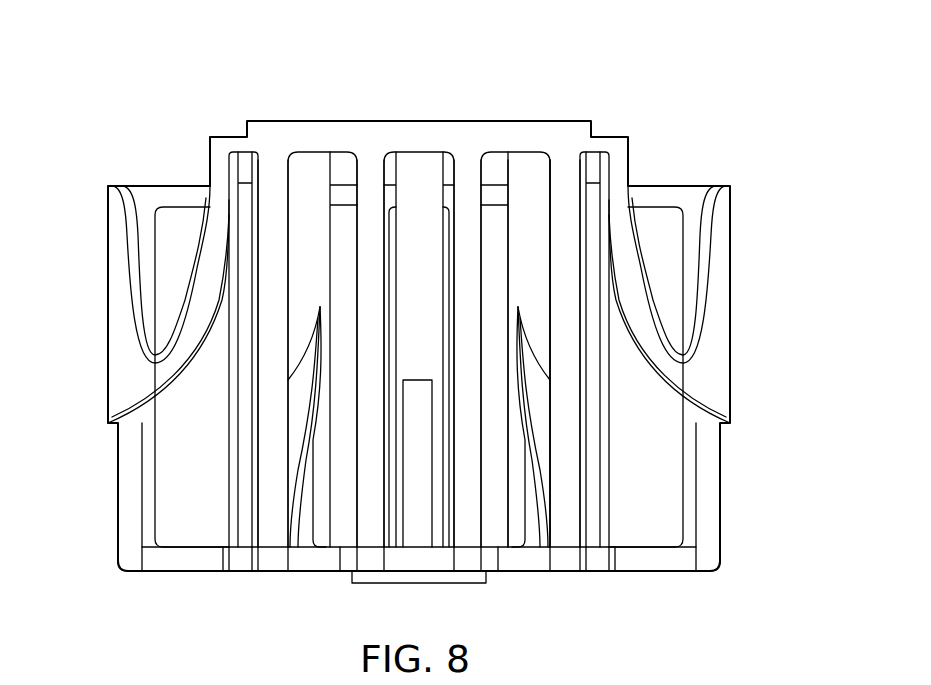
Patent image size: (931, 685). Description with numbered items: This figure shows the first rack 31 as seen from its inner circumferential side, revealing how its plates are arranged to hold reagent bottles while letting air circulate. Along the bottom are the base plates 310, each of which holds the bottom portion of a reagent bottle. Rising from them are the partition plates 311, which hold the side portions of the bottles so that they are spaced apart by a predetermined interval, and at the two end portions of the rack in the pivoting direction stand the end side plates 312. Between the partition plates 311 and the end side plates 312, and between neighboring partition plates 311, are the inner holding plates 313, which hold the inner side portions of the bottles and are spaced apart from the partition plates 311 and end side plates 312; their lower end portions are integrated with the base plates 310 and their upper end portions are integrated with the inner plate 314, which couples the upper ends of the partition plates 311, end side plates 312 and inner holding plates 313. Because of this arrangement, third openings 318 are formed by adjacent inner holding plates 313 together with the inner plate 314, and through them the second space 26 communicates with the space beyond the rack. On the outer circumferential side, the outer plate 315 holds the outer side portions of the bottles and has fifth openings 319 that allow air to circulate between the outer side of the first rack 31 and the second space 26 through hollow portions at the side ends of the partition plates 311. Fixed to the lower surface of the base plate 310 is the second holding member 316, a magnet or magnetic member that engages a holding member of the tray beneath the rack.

The first rack 31 is at (509, 94).
The second space 26 is at (420, 362).
The base plate 310 is at (661, 572).
The partition plate 311 is at (533, 230).
The end side plate 312 is at (713, 362).
The inner holding plate 313 is at (373, 160).
The inner plate 314 is at (380, 131).
The outer plate 315 is at (173, 186).
The second holding member 316 is at (368, 578).
The third opening 318 is at (306, 152).
The fifth opening 319 is at (422, 533).